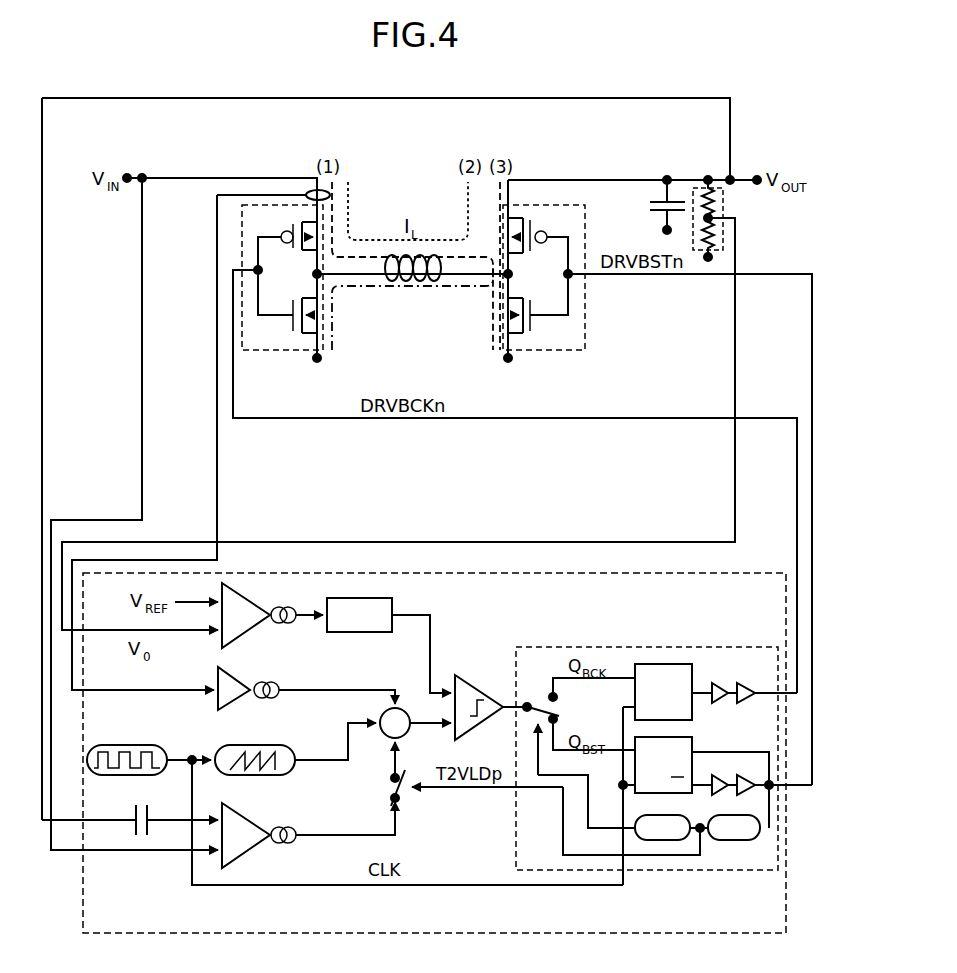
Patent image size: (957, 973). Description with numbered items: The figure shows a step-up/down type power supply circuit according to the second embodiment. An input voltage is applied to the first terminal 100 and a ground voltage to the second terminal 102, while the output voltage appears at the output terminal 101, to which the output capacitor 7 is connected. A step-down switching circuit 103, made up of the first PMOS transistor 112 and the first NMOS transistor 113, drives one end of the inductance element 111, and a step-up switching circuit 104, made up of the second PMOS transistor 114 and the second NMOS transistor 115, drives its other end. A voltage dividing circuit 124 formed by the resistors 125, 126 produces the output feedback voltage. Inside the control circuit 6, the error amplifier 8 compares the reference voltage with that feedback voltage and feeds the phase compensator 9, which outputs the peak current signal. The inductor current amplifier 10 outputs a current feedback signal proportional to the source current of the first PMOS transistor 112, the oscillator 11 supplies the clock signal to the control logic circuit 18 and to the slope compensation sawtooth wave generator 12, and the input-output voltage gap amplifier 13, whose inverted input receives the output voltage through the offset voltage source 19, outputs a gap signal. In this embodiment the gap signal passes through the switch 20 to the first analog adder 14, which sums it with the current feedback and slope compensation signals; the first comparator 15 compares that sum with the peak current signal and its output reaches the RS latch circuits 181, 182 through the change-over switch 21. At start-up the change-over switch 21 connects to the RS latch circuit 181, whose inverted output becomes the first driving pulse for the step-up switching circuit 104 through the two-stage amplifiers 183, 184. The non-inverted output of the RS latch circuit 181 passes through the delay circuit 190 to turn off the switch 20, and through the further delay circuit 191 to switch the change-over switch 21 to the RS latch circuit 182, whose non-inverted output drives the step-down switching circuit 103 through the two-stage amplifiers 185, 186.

The first terminal 100 is at (126, 176).
The output terminal 101 is at (757, 175).
The second terminal 102 is at (317, 362).
The step-down switching circuit 103 is at (242, 229).
The step-up switching circuit 104 is at (585, 228).
The inductance element 111 is at (424, 262).
The first PMOS transistor 112 is at (293, 230).
The first NMOS transistor 113 is at (294, 330).
The second PMOS transistor 114 is at (532, 222).
The second NMOS transistor 115 is at (534, 332).
The output capacitor 7 is at (666, 198).
The voltage dividing circuit 124 is at (723, 200).
The resistor 125 is at (708, 192).
The resistor 126 is at (714, 236).
The control circuit 6 is at (752, 934).
The error amplifier 8 is at (260, 627).
The phase compensator 9 is at (392, 628).
The inductor current amplifier 10 is at (236, 675).
The oscillator 11 is at (116, 756).
The slope compensation sawtooth wave generator 12 is at (250, 756).
The input-output voltage gap amplifier 13 is at (242, 817).
The first analog adder 14 is at (397, 706).
The first comparator 15 is at (474, 684).
The control logic circuit 18 is at (558, 650).
The offset voltage source 19 is at (134, 816).
The switch 20 is at (398, 800).
The change-over switch 21 is at (538, 698).
The RS latch circuit 181 is at (690, 737).
The RS latch circuit 182 is at (662, 664).
The amplifier 183 is at (720, 775).
The amplifier 184 is at (746, 775).
The amplifier 185 is at (720, 683).
The amplifier 186 is at (746, 683).
The delay circuit 190 is at (735, 840).
The delay circuit 191 is at (690, 817).